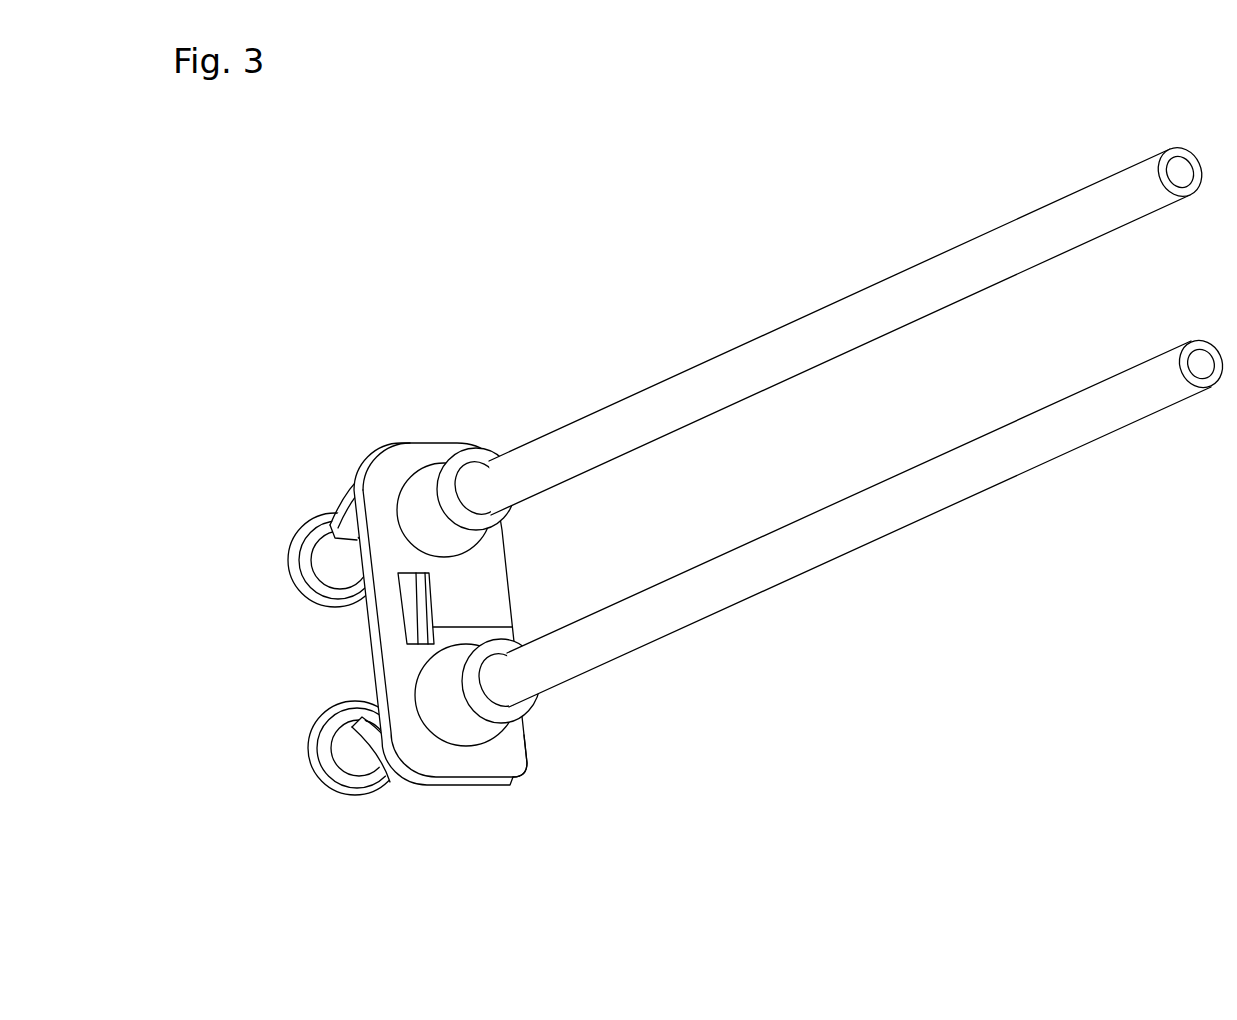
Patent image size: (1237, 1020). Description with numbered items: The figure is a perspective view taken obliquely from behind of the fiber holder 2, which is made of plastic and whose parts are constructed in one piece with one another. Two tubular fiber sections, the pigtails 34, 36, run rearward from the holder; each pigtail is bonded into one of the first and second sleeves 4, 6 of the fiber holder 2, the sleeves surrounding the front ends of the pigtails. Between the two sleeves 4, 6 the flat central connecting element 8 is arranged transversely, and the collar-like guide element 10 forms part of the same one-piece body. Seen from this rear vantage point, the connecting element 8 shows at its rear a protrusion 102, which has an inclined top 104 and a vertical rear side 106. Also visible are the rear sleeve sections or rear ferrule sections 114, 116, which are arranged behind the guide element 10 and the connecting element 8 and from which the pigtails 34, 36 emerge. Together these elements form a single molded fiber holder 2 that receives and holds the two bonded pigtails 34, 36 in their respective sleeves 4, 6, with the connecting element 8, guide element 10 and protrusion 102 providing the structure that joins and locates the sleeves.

The fiber holder 2 is at (510, 588).
The first sleeve 4 is at (465, 730).
The second sleeve 6 is at (434, 480).
The central connecting element 8 is at (465, 592).
The collar-like guide element 10 is at (515, 757).
The pigtail 34 is at (812, 553).
The pigtail 36 is at (762, 362).
The protrusion 102 is at (417, 645).
The inclined top 104 is at (413, 626).
The vertical rear side 106 is at (513, 626).
The rear sleeve section 114 is at (482, 728).
The rear sleeve section 116 is at (415, 498).